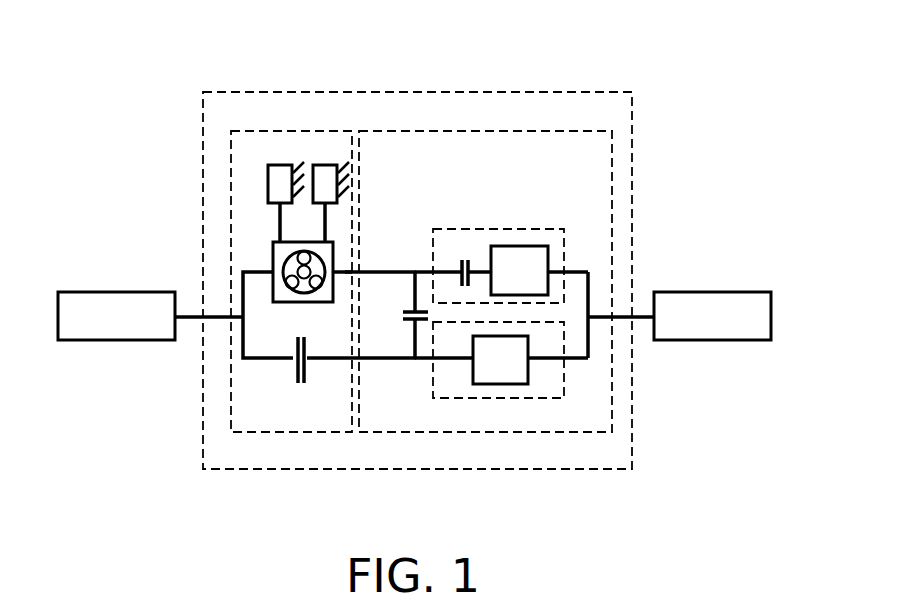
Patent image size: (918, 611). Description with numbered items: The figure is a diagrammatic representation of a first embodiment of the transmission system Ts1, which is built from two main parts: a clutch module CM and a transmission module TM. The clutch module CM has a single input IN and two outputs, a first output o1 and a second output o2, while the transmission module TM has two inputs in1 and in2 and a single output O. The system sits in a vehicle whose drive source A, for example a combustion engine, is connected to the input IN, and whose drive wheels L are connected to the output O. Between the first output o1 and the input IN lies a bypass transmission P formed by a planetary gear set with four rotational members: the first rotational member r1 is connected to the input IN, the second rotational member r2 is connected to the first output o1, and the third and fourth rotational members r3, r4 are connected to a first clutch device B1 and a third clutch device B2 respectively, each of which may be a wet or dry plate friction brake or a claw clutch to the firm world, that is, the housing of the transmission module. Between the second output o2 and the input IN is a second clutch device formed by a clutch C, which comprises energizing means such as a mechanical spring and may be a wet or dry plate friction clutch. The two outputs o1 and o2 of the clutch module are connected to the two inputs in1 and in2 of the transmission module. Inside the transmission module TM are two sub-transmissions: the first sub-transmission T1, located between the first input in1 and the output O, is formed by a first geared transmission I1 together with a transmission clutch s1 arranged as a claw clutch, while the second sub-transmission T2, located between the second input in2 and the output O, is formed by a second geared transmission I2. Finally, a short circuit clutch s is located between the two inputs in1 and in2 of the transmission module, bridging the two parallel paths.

The transmission system Ts1 is at (202, 92).
The clutch module CM is at (252, 130).
The transmission module TM is at (553, 131).
The first sub-transmission T1 is at (554, 229).
The second sub-transmission T2 is at (553, 398).
The first clutch device B1 is at (280, 165).
The third clutch device B2 is at (325, 165).
The third rotational member r3 is at (280, 237).
The fourth rotational member r4 is at (324, 240).
The bypass transmission P is at (283, 260).
The first rotational member r1 is at (270, 280).
The second rotational member r2 is at (338, 265).
The first output o1 is at (353, 275).
The first input in1 is at (360, 268).
The clutch C is at (300, 383).
The second output o2 is at (350, 358).
The second input in2 is at (350, 358).
The short circuit clutch s is at (400, 316).
The transmission clutch s1 is at (465, 258).
The first geared transmission I1 is at (519, 263).
The second geared transmission I2 is at (501, 370).
The drive source A is at (117, 317).
The input IN is at (228, 318).
The output O is at (612, 320).
The drive wheels L is at (715, 321).